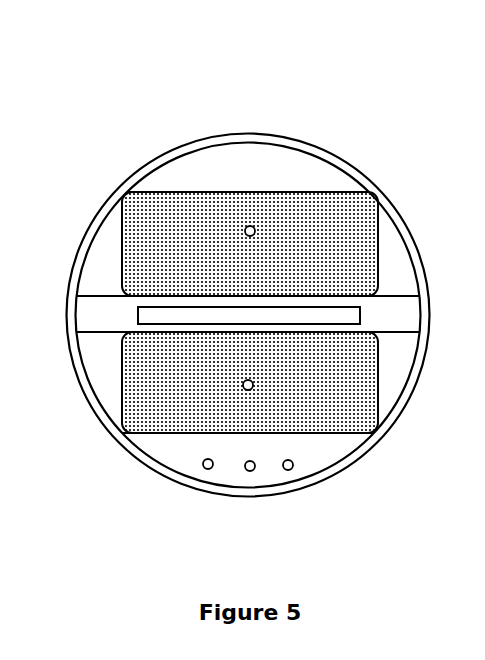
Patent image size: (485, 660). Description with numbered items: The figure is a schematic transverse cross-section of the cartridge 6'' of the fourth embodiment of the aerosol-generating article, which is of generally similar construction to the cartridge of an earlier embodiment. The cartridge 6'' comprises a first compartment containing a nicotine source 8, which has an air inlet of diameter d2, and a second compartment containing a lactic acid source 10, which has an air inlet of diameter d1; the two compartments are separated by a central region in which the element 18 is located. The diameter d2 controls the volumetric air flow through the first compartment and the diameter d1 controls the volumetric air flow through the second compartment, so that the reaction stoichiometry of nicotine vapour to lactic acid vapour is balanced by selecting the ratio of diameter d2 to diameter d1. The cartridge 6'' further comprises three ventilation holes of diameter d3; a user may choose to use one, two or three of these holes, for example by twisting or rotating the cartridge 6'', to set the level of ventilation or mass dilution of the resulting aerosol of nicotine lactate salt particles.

The cartridge 6'' is at (248, 272).
The lactic acid source 10 is at (286, 218).
The nicotine source 8 is at (142, 409).
The slot 18 is at (332, 312).
The diameter of the air inlet of the second compartment d1 is at (243, 226).
The diameter of the air inlet of the first compartment d2 is at (256, 391).
The diameter of the ventilation holes d3 is at (257, 473).